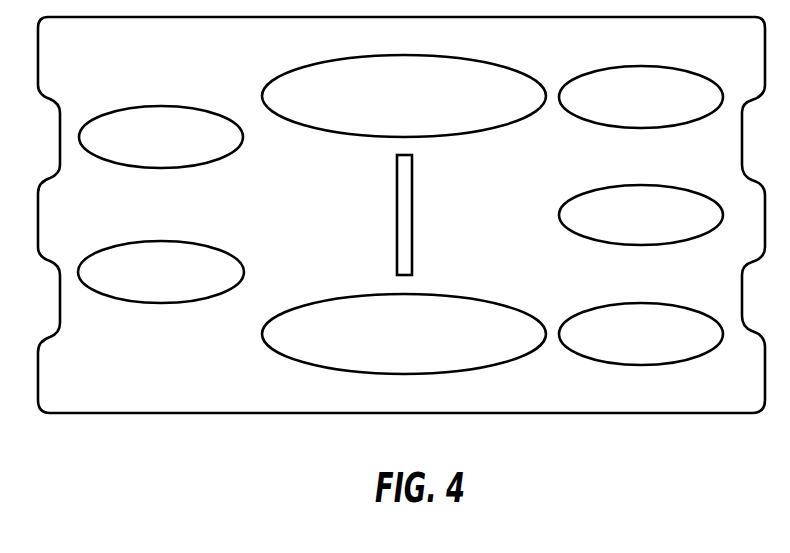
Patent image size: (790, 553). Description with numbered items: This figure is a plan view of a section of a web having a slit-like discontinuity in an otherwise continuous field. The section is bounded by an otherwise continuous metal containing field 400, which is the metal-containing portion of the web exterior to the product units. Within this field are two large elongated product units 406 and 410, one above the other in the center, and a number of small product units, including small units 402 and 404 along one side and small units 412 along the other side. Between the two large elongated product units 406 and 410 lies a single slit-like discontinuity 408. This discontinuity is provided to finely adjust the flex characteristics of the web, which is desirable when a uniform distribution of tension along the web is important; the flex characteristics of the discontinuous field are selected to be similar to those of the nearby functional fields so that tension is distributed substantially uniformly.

The metal containing field 400 is at (64, 61).
The small product unit 402 is at (134, 152).
The small product unit 404 is at (134, 287).
The large elongated product unit 406 is at (379, 112).
The slit-like discontinuity 408 is at (412, 212).
The large elongated product unit 410 is at (379, 349).
The small product unit 412 is at (614, 112).